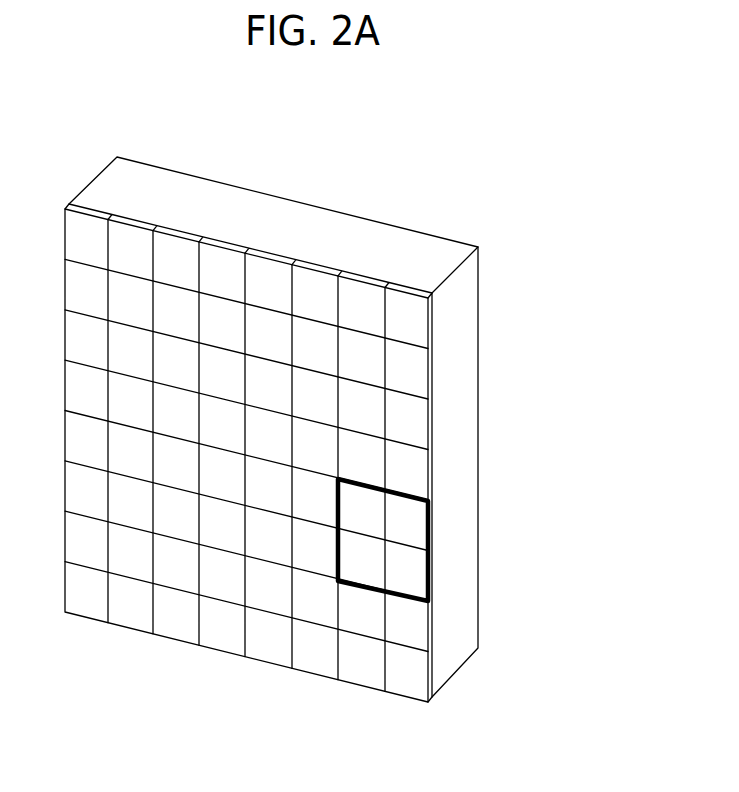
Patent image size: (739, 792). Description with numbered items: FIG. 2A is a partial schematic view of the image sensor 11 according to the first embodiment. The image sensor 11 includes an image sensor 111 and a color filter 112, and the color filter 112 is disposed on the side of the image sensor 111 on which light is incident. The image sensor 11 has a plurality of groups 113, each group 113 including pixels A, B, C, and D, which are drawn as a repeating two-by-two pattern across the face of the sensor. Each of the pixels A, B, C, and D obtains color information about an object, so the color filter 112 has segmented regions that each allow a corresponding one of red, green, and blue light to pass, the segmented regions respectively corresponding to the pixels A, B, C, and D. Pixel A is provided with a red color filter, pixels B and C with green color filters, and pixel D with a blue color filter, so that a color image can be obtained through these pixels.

The image sensor 11 is at (320, 400).
The image sensor 111 is at (223, 183).
The color filter 112 is at (435, 372).
The group 113 is at (410, 493).